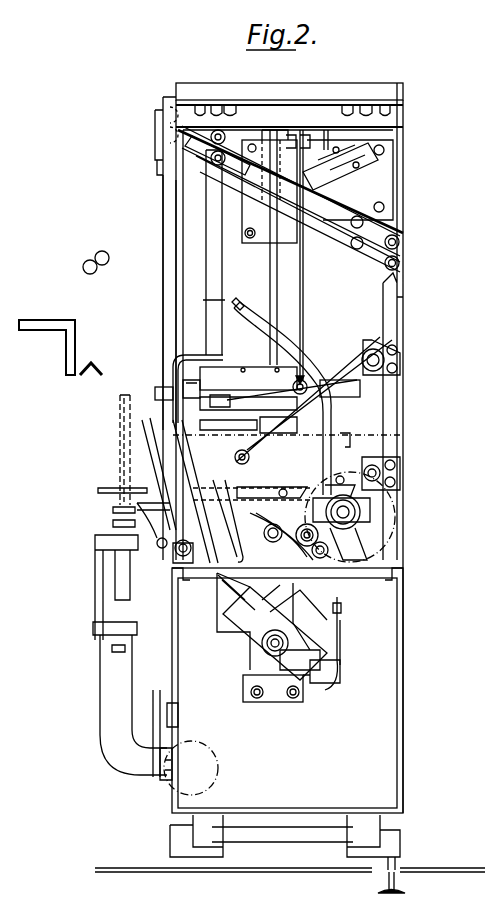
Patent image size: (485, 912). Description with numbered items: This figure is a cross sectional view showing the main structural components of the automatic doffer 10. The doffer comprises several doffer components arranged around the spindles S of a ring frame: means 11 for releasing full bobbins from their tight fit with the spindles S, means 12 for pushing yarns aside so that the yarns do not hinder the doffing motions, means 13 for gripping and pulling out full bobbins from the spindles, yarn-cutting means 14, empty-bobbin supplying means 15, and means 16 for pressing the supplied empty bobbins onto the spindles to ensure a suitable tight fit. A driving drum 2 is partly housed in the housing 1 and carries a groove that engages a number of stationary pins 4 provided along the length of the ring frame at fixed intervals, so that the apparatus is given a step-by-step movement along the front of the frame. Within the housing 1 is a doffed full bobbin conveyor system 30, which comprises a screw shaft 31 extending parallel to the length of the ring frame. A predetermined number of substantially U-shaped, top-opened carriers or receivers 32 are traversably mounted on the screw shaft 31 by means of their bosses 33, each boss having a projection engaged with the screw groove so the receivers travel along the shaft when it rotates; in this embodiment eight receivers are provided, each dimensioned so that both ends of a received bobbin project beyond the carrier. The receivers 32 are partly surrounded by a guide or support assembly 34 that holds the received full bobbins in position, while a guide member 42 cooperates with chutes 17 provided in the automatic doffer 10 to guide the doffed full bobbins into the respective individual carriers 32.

The housing 1 is at (401, 614).
The driving drum 2 is at (219, 765).
The stationary pins 4 is at (168, 765).
The automatic doffer 10 is at (147, 139).
The means for releasing full bobbins 11 is at (127, 492).
The means for pushing yarns aside 12 is at (175, 385).
The means for gripping and pulling out full bobbins 13 is at (182, 370).
The yarn-cutting means 14 is at (170, 440).
The empty-bobbin supplying means 15 is at (162, 186).
The means for pressing empty bobbins 16 is at (322, 347).
The chutes 17 is at (215, 488).
The doffed full bobbin conveyor system 30 is at (240, 654).
The screw shaft 31 is at (278, 690).
The carriers or receivers 32 is at (312, 690).
The bosses 33 is at (300, 622).
The guide or support assembly 34 is at (338, 645).
The guide member 42 is at (245, 600).
The spindles S is at (120, 424).